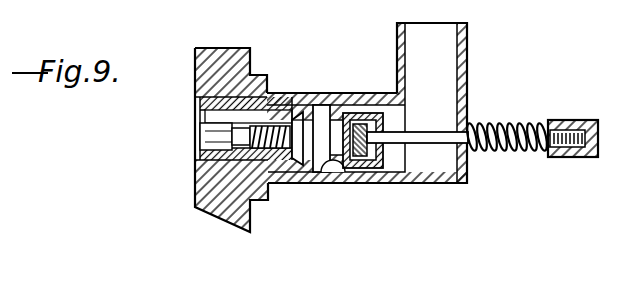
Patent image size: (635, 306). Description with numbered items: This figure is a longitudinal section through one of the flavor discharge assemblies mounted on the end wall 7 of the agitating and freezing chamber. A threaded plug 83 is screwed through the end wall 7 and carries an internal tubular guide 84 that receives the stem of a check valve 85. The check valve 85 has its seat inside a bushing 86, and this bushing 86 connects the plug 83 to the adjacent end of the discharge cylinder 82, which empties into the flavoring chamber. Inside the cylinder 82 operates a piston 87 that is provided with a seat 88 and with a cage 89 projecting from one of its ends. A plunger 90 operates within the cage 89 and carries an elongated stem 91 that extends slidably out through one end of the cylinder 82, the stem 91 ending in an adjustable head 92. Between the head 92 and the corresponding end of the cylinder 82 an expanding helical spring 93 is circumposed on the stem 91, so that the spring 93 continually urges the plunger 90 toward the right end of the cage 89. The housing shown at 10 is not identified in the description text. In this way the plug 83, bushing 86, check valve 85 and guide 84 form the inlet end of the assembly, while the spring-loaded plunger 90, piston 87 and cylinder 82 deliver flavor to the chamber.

The end wall 7 is at (229, 47).
The housing 10 is at (387, 95).
The discharge cylinder 82 is at (324, 98).
The threaded plug 83 is at (207, 117).
The internal tubular guide 84 is at (207, 152).
The check valve 85 is at (291, 184).
The bushing 86 is at (298, 100).
The piston 87 is at (339, 101).
The seat 88 is at (322, 183).
The cage 89 is at (383, 160).
The plunger 90 is at (352, 185).
The elongated stem 91 is at (413, 131).
The adjustable head 92 is at (575, 119).
The expanding helical spring 93 is at (498, 124).